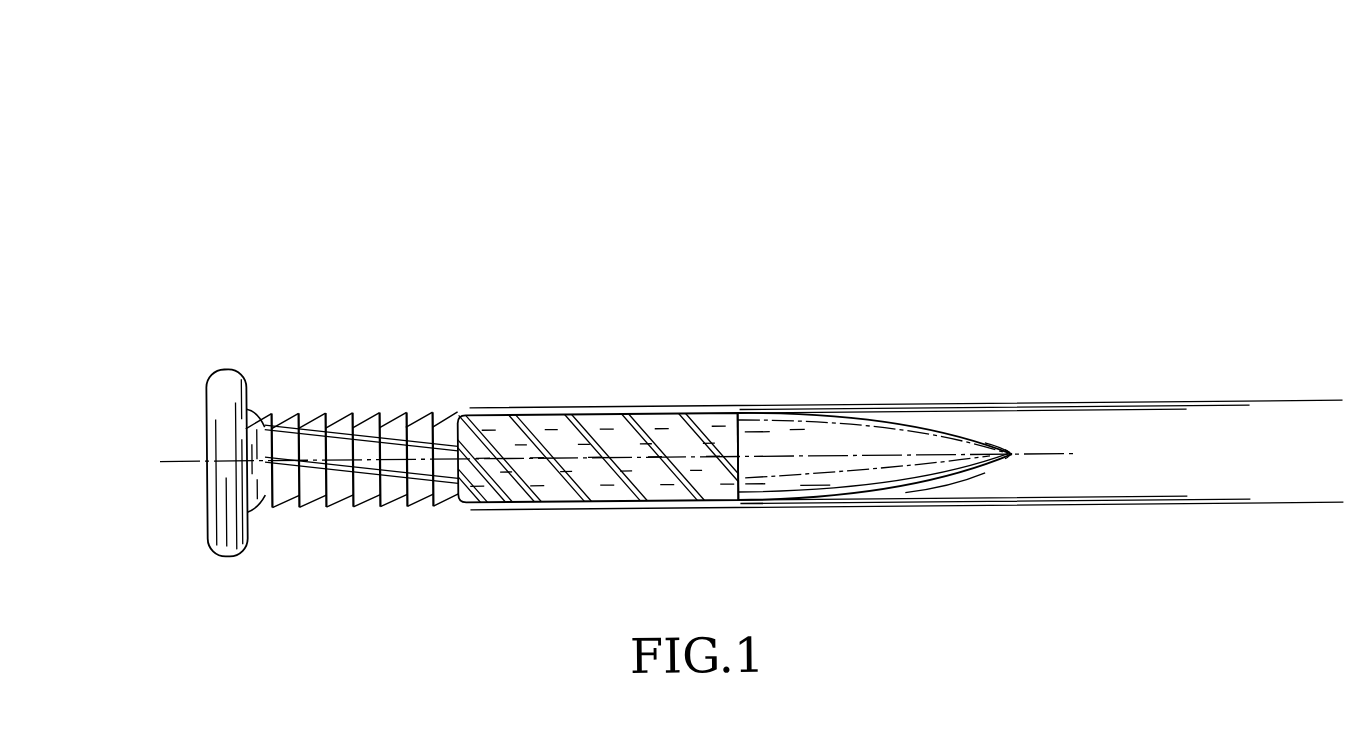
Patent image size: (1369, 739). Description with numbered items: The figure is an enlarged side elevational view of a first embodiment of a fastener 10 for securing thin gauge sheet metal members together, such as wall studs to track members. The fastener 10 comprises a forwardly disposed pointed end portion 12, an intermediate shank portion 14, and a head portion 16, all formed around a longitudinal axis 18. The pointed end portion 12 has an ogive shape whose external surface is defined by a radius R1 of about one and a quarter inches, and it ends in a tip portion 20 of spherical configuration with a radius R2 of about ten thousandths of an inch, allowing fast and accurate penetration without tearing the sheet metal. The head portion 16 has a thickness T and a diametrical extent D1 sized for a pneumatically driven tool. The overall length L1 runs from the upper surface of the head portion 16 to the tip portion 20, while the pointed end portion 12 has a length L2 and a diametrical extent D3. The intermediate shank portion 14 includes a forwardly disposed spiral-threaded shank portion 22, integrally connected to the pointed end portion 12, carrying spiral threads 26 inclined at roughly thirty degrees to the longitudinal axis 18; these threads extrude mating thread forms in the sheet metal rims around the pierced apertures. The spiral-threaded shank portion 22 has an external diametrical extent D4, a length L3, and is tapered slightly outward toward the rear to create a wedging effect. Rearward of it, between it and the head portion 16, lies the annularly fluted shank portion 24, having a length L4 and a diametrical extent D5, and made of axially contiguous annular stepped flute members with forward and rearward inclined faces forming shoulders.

The fastener 10 is at (1145, 215).
The pointed end portion 12 is at (845, 437).
The intermediate shank portion 14 is at (532, 408).
The head portion 16 is at (218, 395).
The longitudinal axis 18 is at (766, 452).
The tip portion 20 is at (1019, 463).
The spiral-threaded shank portion 22 is at (564, 477).
The annularly fluted shank portion 24 is at (358, 421).
The spiral threads 26 is at (674, 419).
The radius of external surface portion R1 is at (945, 488).
The radius of tip portion R2 is at (1016, 452).
The thickness dimension of head portion T is at (248, 353).
The overall length of fastener L1 is at (1013, 455).
The length of pointed end portion L2 is at (1013, 216).
The length of spiral-threaded shank portion L3 is at (738, 409).
The length of annularly fluted shank portion L4 is at (457, 409).
The diametrical extent of head portion D1 is at (77, 364).
The diametrical extent of pointed end portion D3 is at (1128, 413).
The external diametrical extent of spiral-threaded shank portion D4 is at (1223, 410).
The diametrical extent of annularly fluted shank portion D5 is at (1312, 406).